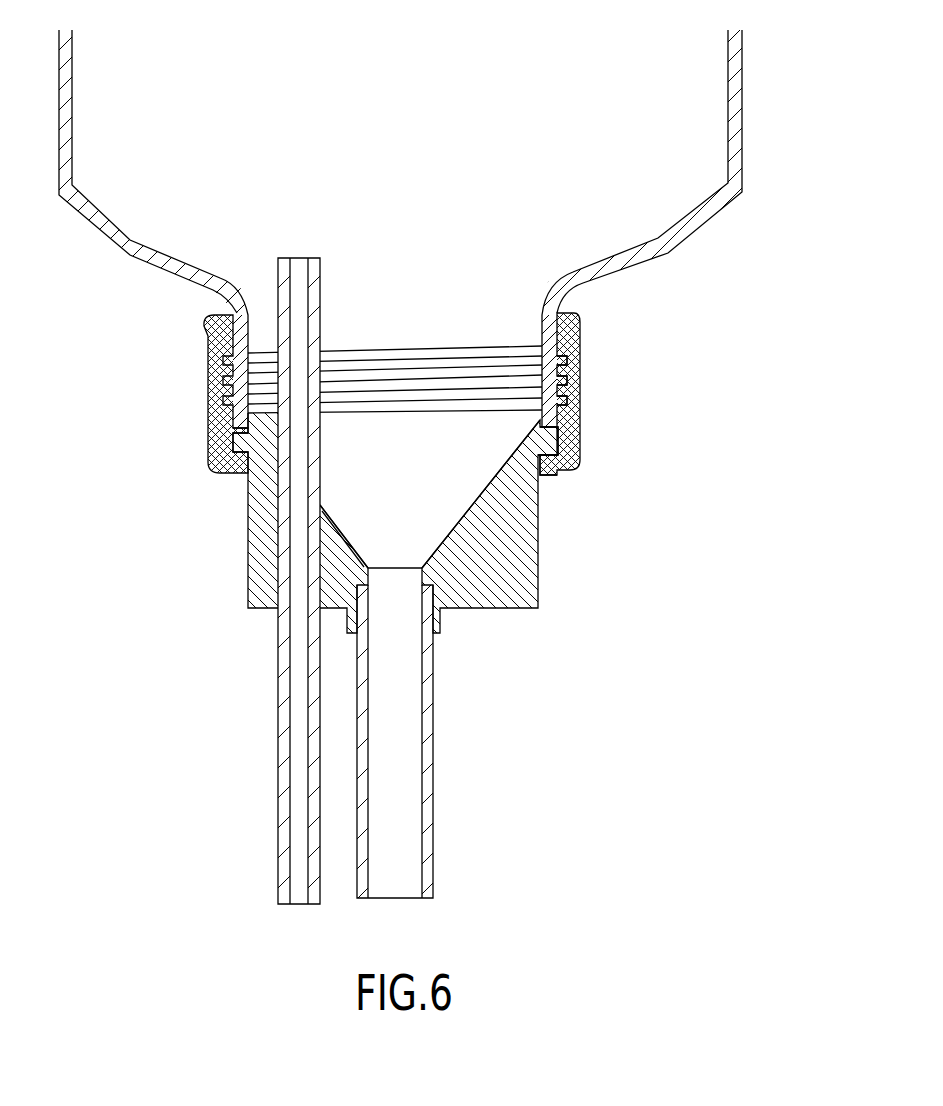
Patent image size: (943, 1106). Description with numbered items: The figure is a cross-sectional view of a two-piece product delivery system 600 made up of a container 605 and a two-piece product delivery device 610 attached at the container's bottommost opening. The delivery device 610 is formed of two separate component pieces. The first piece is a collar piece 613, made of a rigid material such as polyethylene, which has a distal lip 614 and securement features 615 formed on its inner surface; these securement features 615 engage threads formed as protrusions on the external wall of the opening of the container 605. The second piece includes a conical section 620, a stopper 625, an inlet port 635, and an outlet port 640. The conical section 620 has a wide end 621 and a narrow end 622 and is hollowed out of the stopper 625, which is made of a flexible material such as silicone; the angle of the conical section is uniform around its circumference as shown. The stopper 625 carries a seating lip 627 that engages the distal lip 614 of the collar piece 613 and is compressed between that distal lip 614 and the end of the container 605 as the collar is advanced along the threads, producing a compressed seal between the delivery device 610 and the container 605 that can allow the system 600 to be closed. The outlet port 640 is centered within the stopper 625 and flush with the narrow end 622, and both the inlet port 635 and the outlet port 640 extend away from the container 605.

The two-piece product delivery system 600 is at (471, 495).
The container 605 is at (742, 90).
The two-piece product delivery device 610 is at (408, 482).
The collar piece 613 is at (205, 342).
The securement features 615 is at (570, 388).
The conical section 620 is at (197, 412).
The wide end 621 is at (558, 437).
The narrow end 622 is at (430, 560).
The stopper 625 is at (540, 547).
The seating lip 627 is at (570, 470).
The distal lip 614 is at (562, 478).
The inlet port 635 is at (278, 690).
The outlet port 640 is at (552, 868).